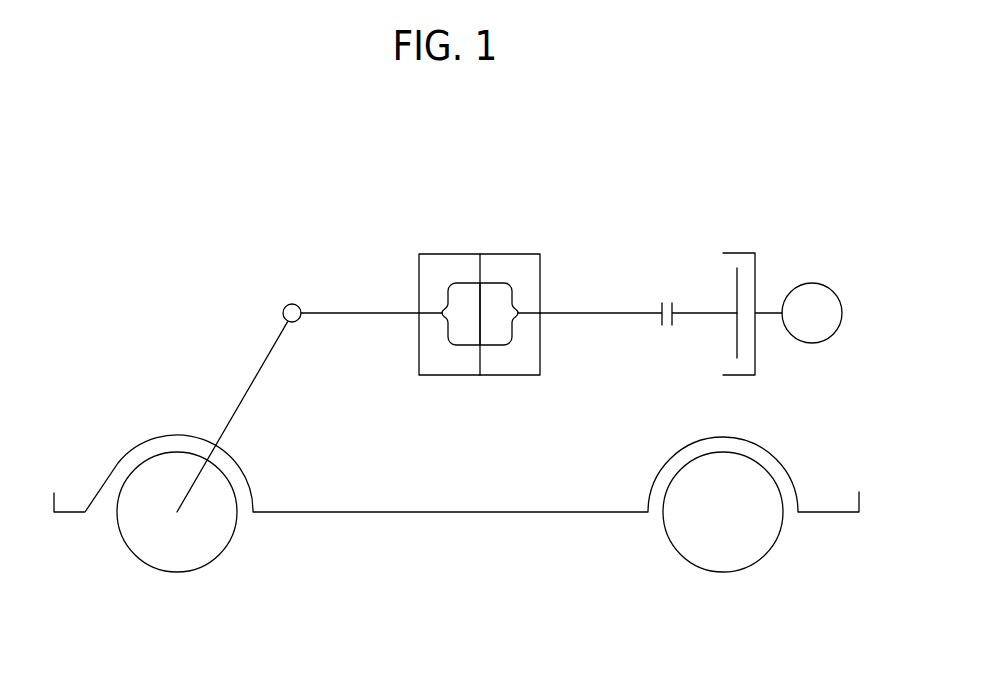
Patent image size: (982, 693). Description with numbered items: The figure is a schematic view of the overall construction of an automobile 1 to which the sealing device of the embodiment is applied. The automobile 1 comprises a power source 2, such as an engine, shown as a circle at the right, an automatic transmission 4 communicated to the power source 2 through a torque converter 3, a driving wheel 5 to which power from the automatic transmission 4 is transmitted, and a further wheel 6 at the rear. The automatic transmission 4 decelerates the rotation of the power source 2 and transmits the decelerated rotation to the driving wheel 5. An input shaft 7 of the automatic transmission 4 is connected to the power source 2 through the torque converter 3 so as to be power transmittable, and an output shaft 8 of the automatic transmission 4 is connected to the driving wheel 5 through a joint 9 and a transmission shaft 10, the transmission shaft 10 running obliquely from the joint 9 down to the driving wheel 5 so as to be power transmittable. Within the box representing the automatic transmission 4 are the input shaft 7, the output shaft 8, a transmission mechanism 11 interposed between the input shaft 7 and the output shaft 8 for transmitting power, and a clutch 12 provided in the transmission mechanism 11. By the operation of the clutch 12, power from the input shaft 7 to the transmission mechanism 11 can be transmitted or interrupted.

The automobile 1 is at (503, 512).
The power source 2 is at (812, 283).
The torque converter 3 is at (740, 243).
The automatic transmission 4 is at (545, 248).
The driving wheel 5 is at (197, 572).
The wheel 6 is at (745, 567).
The input shaft 7 is at (611, 313).
The output shaft 8 is at (340, 313).
The joint 9 is at (283, 308).
The transmission shaft 10 is at (248, 382).
The transmission mechanism 11 is at (448, 268).
The clutch 12 is at (510, 268).